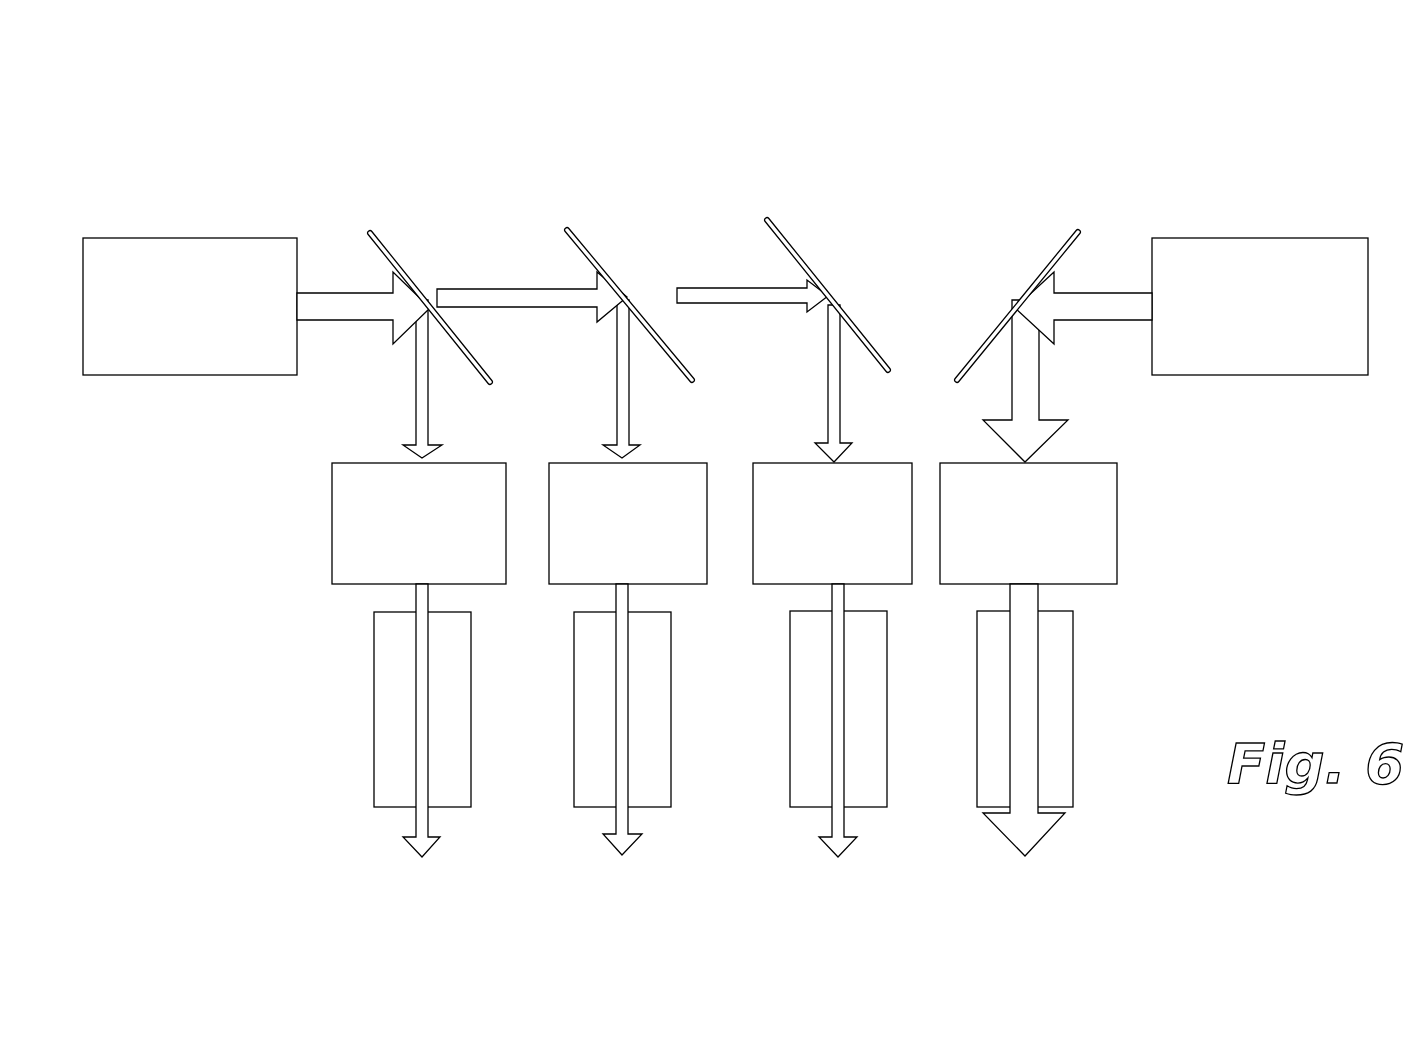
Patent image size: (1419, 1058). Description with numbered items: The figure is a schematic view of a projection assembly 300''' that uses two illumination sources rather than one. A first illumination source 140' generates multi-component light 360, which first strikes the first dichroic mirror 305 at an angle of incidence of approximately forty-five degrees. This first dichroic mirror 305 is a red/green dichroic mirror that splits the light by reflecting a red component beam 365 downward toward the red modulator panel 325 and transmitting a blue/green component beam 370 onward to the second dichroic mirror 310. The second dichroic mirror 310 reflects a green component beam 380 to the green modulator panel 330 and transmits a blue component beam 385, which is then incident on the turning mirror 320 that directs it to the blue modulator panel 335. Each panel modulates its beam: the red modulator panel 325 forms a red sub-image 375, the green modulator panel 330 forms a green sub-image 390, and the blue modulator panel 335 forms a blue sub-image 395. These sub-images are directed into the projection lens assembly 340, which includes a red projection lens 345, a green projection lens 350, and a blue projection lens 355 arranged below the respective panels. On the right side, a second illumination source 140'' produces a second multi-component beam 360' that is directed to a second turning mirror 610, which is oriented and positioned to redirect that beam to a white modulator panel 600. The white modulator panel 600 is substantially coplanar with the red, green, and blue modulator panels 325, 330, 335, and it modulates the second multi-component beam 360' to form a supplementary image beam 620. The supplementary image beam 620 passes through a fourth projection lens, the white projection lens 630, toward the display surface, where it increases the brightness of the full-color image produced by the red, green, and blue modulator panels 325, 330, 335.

The projection assembly 300''' is at (305, 61).
The first illumination source 140' is at (190, 306).
The second illumination source 140'' is at (1260, 306).
The multi-component light 360 is at (351, 250).
The second multi-component beam 360' is at (1100, 248).
The first dichroic mirror 305 is at (390, 248).
The second dichroic mirror 310 is at (588, 252).
The turning mirror 320 is at (783, 235).
The second turning mirror 610 is at (1057, 250).
The red component beam 365 is at (400, 385).
The blue/green component beam 370 is at (520, 270).
The green component beam 380 is at (601, 385).
The blue component beam 385 is at (730, 270).
The red modulator panel 325 is at (419, 523).
The green modulator panel 330 is at (628, 523).
The blue modulator panel 335 is at (832, 523).
The white modulator panel 600 is at (1028, 523).
The projection lens assembly 340 is at (286, 703).
The red projection lens 345 is at (373, 697).
The green projection lens 350 is at (573, 712).
The blue projection lens 355 is at (790, 720).
The white projection lens 630 is at (1073, 695).
The red sub-image 375 is at (399, 826).
The green sub-image 390 is at (600, 811).
The blue sub-image 395 is at (818, 818).
The supplementary image beam 620 is at (1062, 836).